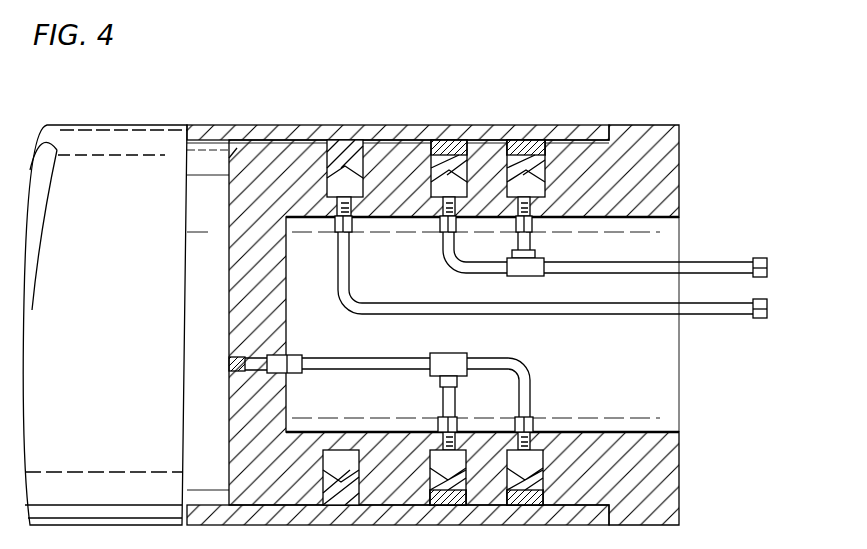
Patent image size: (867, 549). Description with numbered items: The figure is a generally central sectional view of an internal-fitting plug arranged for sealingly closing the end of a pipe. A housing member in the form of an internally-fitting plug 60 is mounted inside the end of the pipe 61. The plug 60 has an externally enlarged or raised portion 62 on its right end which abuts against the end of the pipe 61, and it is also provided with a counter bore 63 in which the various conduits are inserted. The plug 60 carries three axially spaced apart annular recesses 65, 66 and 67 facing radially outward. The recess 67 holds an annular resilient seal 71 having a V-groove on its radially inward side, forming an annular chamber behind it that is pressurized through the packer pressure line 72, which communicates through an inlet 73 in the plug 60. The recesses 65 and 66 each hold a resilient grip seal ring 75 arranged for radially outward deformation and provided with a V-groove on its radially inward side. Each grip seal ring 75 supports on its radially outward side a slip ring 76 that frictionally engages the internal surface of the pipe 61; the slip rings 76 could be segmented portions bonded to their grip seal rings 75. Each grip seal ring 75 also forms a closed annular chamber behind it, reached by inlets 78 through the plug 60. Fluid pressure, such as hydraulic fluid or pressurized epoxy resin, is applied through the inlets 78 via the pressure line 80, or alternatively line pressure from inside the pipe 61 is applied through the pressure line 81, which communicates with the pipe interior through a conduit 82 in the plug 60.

The internally-fitting plug 60 is at (682, 165).
The pipe 61 is at (97, 266).
The externally enlarged or raised portion 62 is at (652, 123).
The counter bore 63 is at (656, 432).
The annular recess 65 is at (560, 138).
The annular recess 66 is at (434, 148).
The annular recess 67 is at (336, 148).
The annular resilient seal 71 is at (352, 152).
The packer pressure line 72 is at (726, 316).
The inlet 73 is at (359, 218).
The resilient grip seal ring 75 is at (467, 170).
The slip ring 76 is at (452, 150).
The inlet 78 is at (517, 208).
The pressure line 80 is at (728, 259).
The pressure line 81 is at (351, 358).
The conduit 82 is at (230, 361).